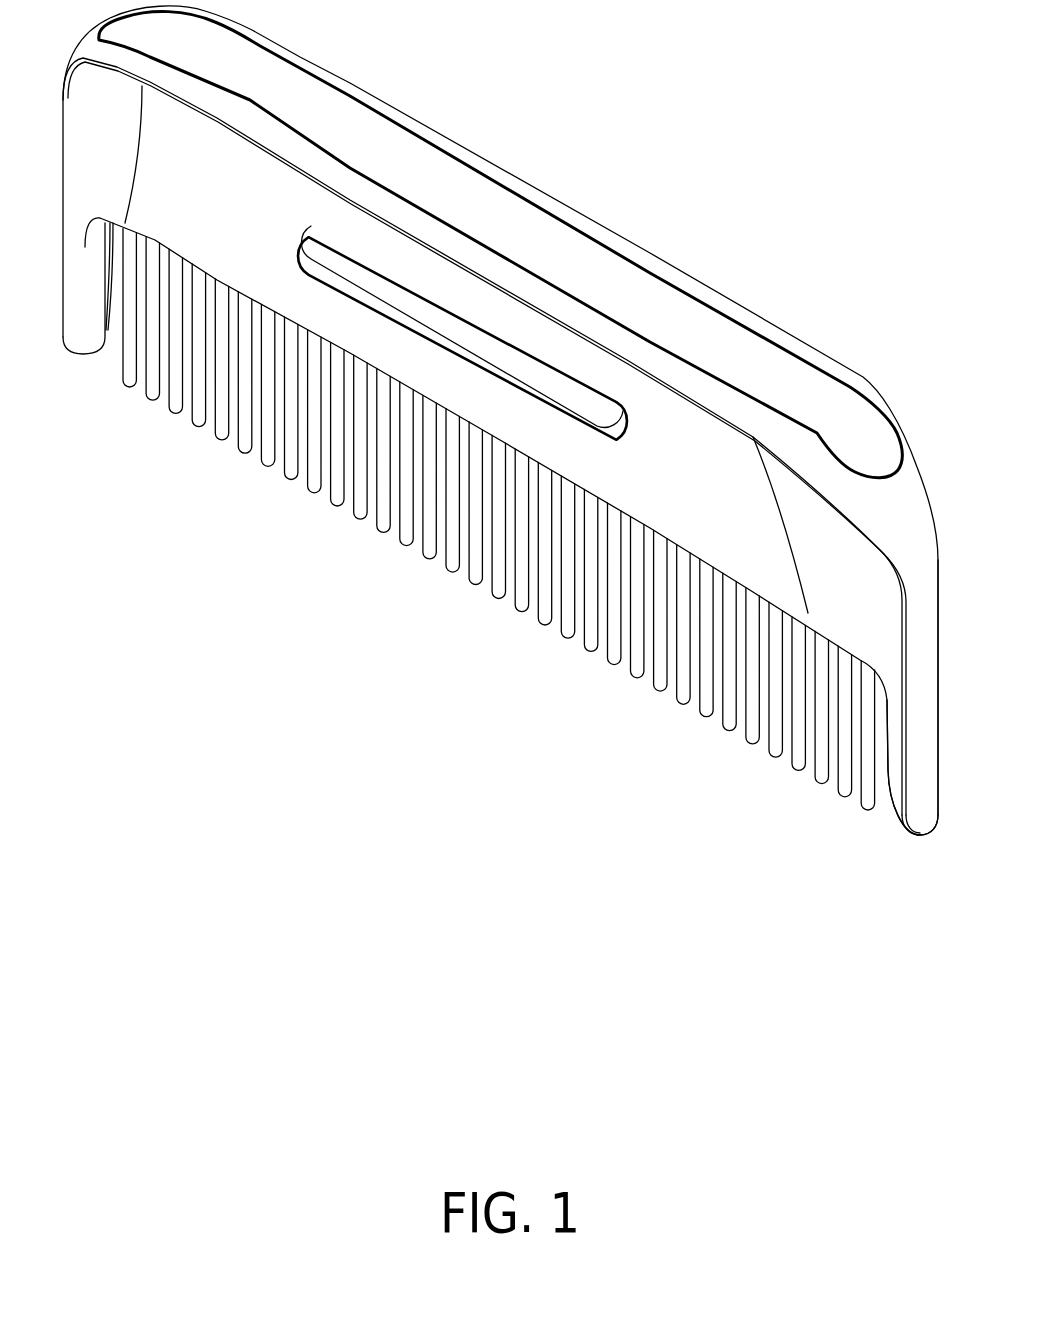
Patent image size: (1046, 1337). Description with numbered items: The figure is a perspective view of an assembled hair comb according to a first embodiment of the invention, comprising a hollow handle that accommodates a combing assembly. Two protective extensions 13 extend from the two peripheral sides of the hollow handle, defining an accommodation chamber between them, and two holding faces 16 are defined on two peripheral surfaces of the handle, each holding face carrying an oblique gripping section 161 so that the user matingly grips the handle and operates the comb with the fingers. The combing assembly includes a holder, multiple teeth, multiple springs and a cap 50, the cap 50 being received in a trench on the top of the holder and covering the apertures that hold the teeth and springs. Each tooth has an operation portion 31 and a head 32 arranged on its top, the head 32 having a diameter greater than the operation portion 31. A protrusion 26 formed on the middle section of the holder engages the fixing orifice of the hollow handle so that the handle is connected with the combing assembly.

The protective extension 13 is at (898, 758).
The holding face 16 is at (501, 306).
The oblique gripping section 161 is at (843, 600).
The protrusion 26 is at (457, 330).
The operation portion 31 is at (722, 688).
The head 32 is at (730, 732).
The cap 50 is at (528, 218).